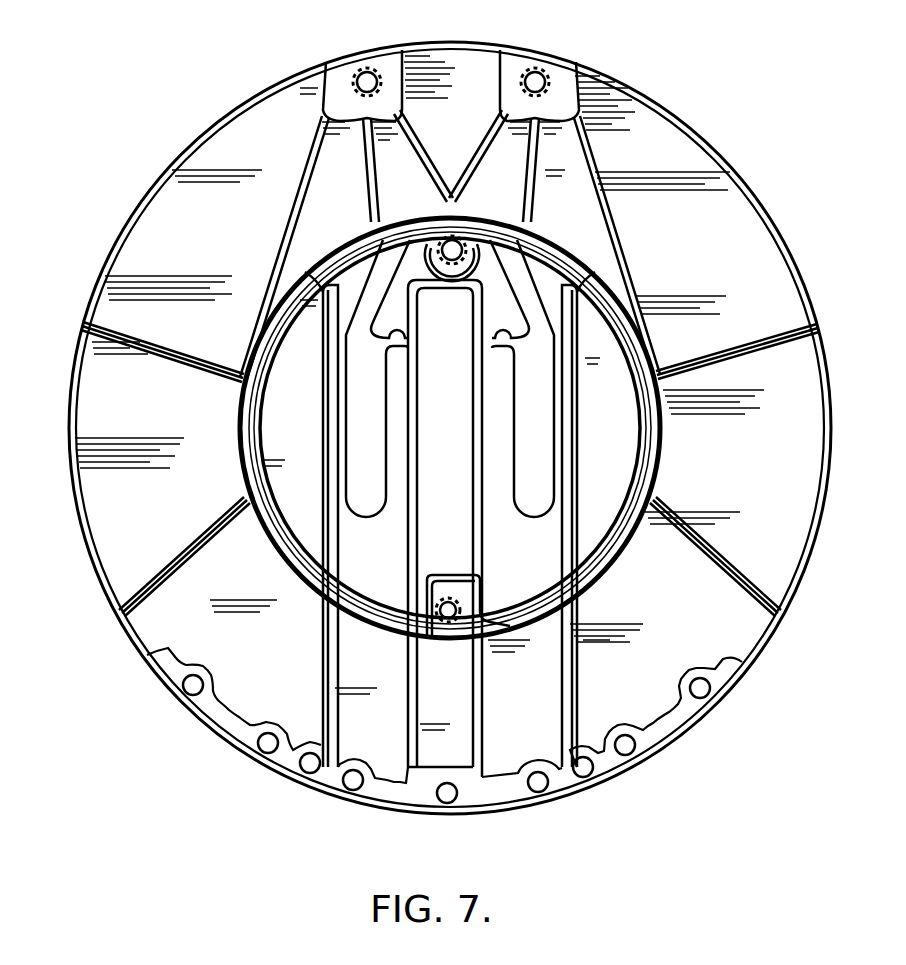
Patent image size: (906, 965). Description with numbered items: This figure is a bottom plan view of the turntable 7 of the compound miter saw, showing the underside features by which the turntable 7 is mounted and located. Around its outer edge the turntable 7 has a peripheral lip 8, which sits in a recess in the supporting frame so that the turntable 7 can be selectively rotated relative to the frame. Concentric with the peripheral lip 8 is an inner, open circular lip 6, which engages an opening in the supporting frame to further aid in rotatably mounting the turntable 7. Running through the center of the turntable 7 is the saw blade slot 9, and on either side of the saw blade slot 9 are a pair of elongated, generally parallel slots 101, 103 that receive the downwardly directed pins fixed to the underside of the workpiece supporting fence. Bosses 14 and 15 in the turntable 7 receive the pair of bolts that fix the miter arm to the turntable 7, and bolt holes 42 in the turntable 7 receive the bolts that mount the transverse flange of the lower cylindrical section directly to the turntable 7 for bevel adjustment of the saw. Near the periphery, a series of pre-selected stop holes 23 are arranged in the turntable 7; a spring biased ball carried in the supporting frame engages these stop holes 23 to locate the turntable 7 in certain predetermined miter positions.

The turntable 7 is at (118, 214).
The peripheral lip 8 is at (674, 134).
The bolt holes 42 is at (367, 68).
The inner open circular lip 6 is at (662, 446).
The boss 15 is at (462, 240).
The saw blade slot 9 is at (465, 325).
The elongated slot 101 is at (350, 508).
The elongated slot 103 is at (548, 500).
The boss 14 is at (447, 628).
The stop holes 23 is at (185, 697).